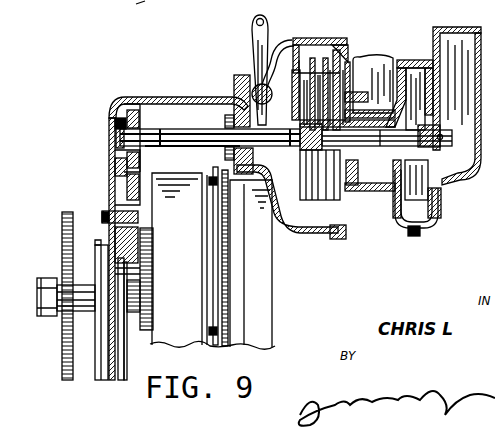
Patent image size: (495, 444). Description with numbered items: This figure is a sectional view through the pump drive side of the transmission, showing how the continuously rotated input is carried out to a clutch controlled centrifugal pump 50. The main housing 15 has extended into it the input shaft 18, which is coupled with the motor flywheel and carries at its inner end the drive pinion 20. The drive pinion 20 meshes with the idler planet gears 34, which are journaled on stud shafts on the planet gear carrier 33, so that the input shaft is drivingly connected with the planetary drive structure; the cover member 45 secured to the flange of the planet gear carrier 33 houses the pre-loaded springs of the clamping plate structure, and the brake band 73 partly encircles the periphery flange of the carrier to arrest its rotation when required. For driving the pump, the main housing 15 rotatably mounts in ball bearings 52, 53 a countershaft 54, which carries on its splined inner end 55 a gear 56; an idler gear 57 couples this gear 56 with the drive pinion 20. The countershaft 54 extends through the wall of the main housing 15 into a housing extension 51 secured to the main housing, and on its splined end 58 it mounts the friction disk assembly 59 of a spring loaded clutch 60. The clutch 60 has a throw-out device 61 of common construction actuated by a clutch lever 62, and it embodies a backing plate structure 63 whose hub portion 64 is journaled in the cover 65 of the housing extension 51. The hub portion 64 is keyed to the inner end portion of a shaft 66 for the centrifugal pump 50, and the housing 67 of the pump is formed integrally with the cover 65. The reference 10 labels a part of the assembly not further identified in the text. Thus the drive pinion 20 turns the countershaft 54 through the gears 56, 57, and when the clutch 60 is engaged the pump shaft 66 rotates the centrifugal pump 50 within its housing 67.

The housing wall 10 is at (110, 386).
The housing 15 is at (110, 364).
The input shaft 18 is at (89, 277).
The drive pinion 20 is at (142, 332).
The planet gear carrier 33 is at (211, 170).
The idler planet gears 34 is at (153, 250).
The cover member 45 is at (273, 266).
The centrifugal pump 50 is at (407, 56).
The housing extension 51 is at (200, 97).
The ball bearing 52 is at (115, 118).
The ball bearing 53 is at (225, 120).
The countershaft 54 is at (168, 137).
The splined inner end 55 is at (116, 136).
The gear 56 is at (143, 110).
The idler gear 57 is at (112, 178).
The splined end 58 is at (356, 243).
The friction disk assembly 59 is at (330, 48).
The spring loaded clutch 60 is at (284, 41).
The throw-out device 61 is at (240, 95).
The clutch lever 62 is at (253, 44).
The backing plate structure 63 is at (348, 62).
The hub portion 64 is at (361, 60).
The cover 65 is at (399, 218).
The shaft 66 is at (434, 120).
The housing 67 is at (430, 222).
The brake band 73 is at (198, 346).